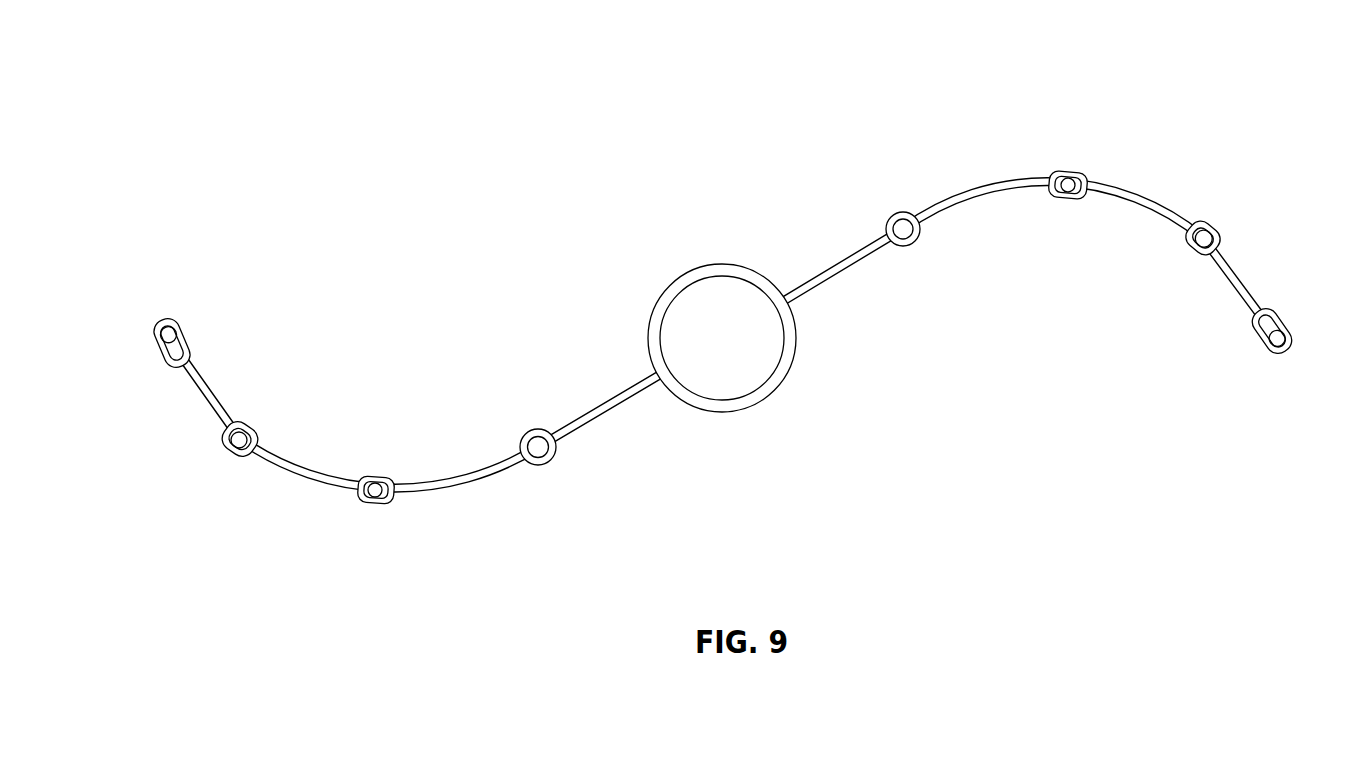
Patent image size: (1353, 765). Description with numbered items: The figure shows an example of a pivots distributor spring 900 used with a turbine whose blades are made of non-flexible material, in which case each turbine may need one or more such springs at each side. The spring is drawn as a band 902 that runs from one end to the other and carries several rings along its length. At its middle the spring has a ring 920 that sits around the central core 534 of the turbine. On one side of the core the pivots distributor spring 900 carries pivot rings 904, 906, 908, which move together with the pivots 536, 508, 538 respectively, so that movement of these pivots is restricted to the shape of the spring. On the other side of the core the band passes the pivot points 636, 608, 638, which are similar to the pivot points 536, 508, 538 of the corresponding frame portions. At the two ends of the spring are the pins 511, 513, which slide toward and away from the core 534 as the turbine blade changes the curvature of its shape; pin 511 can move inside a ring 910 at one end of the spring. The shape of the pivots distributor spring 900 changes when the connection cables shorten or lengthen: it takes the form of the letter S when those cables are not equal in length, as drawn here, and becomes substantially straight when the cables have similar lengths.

The pivots distributor spring 900 is at (365, 134).
The band 902 is at (1158, 215).
The pivot ring 904 is at (540, 468).
The pivot ring 906 is at (363, 506).
The pivot ring 908 is at (238, 418).
The ring 910 is at (167, 370).
The pin 511 is at (165, 336).
The pin 513 is at (1273, 344).
The central core 534 is at (722, 340).
The pivot 536 is at (538, 447).
The pivot 538 is at (238, 443).
The pivot 508 is at (378, 492).
The pivot point 608 is at (1067, 187).
The pivot point 636 is at (903, 231).
The pivot point 638 is at (1213, 230).
The ring 920 is at (738, 264).